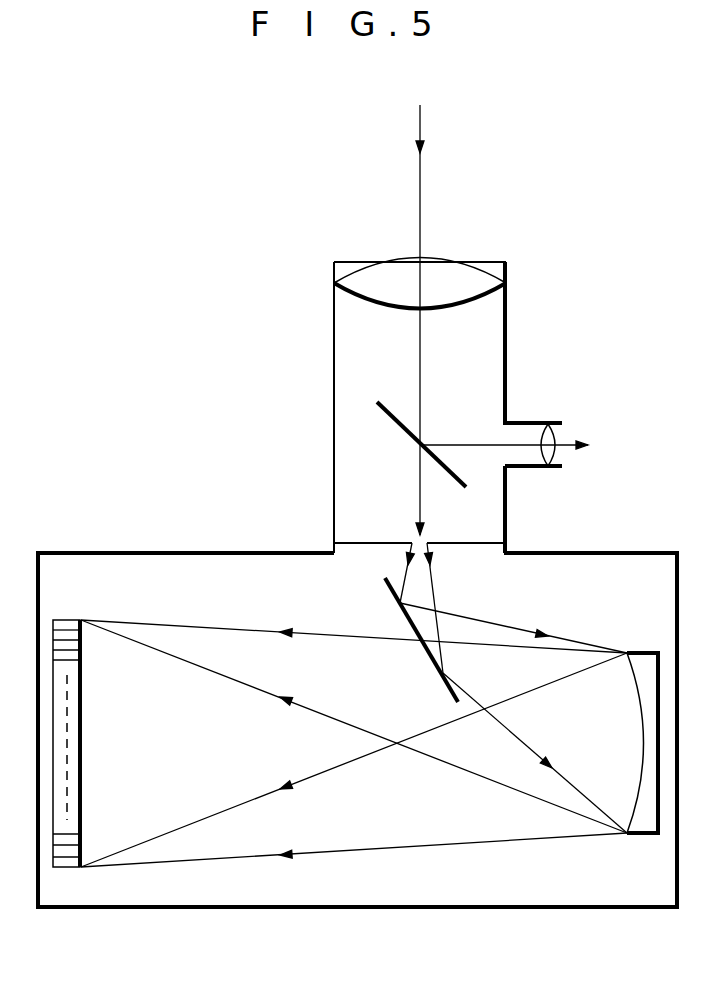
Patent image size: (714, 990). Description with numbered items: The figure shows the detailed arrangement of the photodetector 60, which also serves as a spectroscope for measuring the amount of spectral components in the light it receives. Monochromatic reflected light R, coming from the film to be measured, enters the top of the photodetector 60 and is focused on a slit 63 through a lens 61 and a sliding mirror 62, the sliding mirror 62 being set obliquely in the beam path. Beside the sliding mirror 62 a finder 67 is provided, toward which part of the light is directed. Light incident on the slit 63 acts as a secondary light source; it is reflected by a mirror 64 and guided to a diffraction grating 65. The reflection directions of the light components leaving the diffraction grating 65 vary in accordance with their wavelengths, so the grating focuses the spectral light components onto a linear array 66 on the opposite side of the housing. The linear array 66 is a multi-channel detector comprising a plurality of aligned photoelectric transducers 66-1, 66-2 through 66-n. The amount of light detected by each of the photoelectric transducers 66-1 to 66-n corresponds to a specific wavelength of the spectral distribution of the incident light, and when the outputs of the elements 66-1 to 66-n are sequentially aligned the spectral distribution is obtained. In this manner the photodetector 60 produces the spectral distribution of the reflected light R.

The reflected light R is at (423, 172).
The photodetector 60 is at (600, 909).
The lens 61 is at (457, 290).
The sliding mirror 62 is at (392, 422).
The slit 63 is at (365, 543).
The mirror 64 is at (392, 593).
The diffraction grating 65 is at (643, 657).
The linear array 66 is at (91, 744).
The photoelectric transducer 66-1 is at (64, 626).
The photoelectric transducer 66-2 is at (78, 635).
The photoelectric transducer 66-n is at (67, 868).
The finder 67 is at (533, 423).